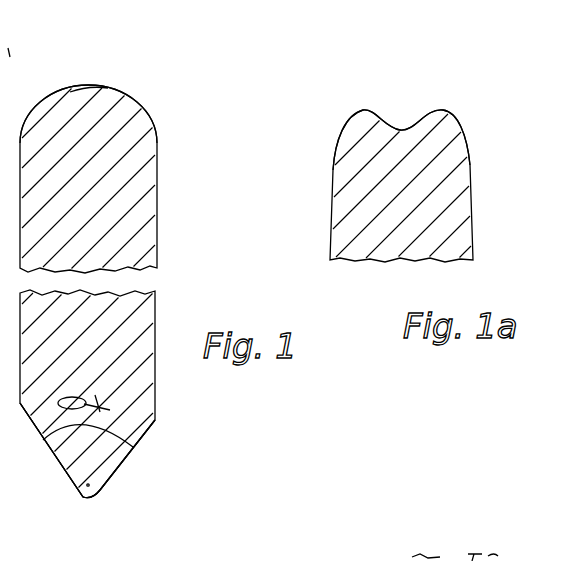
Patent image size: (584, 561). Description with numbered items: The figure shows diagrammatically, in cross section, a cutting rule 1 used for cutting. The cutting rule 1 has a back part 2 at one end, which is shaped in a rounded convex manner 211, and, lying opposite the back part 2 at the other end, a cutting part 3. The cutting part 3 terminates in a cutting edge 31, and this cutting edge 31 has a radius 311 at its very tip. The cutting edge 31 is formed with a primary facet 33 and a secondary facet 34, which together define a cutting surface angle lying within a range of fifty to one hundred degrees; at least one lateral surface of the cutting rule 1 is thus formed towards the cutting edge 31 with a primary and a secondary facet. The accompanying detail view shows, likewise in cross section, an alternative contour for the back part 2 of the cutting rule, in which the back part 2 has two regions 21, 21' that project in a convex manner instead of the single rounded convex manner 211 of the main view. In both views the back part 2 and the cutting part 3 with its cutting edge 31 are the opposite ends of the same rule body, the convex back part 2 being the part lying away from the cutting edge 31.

In FIG. 1, the cutting rule 1 is at (138, 245).
In FIG. 1, the back part 2 is at (100, 122).
In FIG. 1A, the back part 2 is at (390, 142).
In FIG. 1, the rounded convex manner 211 is at (95, 88).
In FIG. 1A, the region projecting in a convex manner 21 is at (345, 123).
In FIG. 1A, the region projecting in a convex manner 21' is at (478, 112).
In FIG. 1, the cutting part 3 is at (103, 447).
In FIG. 1, the cutting edge 31 is at (102, 475).
In FIG. 1, the radius 311 is at (80, 495).
In FIG. 1, the primary facet 33 is at (62, 470).
In FIG. 1, the secondary facet 34 is at (133, 447).